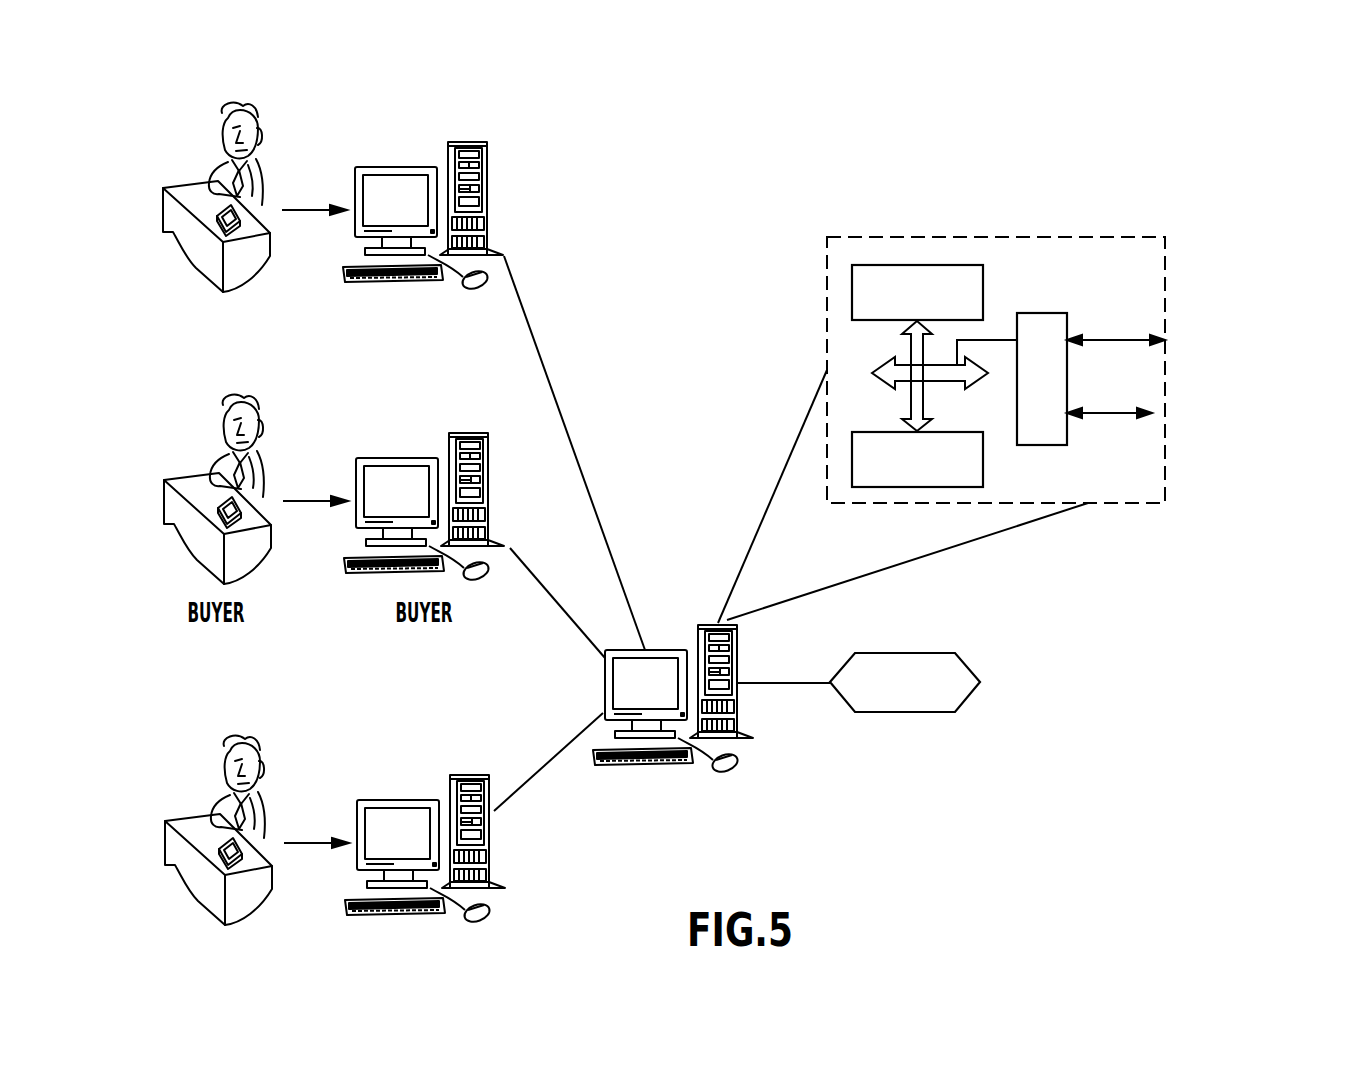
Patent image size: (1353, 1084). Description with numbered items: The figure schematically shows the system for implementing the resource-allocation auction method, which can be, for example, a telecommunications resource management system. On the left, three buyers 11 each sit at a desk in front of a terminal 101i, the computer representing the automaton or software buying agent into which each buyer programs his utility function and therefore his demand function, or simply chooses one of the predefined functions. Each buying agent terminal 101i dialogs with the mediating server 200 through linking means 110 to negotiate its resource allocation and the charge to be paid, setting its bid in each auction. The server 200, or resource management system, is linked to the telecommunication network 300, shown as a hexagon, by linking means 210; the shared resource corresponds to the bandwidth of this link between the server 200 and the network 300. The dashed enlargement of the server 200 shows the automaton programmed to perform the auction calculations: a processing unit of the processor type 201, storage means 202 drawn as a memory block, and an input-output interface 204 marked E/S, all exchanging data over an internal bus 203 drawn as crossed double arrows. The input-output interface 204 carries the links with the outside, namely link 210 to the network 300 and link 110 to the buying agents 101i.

The buyer 11 is at (248, 103).
The buyer terminal computer 101i is at (487, 173).
The linking means to the buying agents 110 is at (560, 408).
The server 200 is at (660, 650).
The processing unit of the processor type 201 is at (983, 288).
The storage means 202 is at (912, 487).
The bus 203 is at (945, 382).
The input-output interface 204 is at (1067, 388).
The linking means to the network 210 is at (783, 683).
The telecommunication network 300 is at (898, 652).